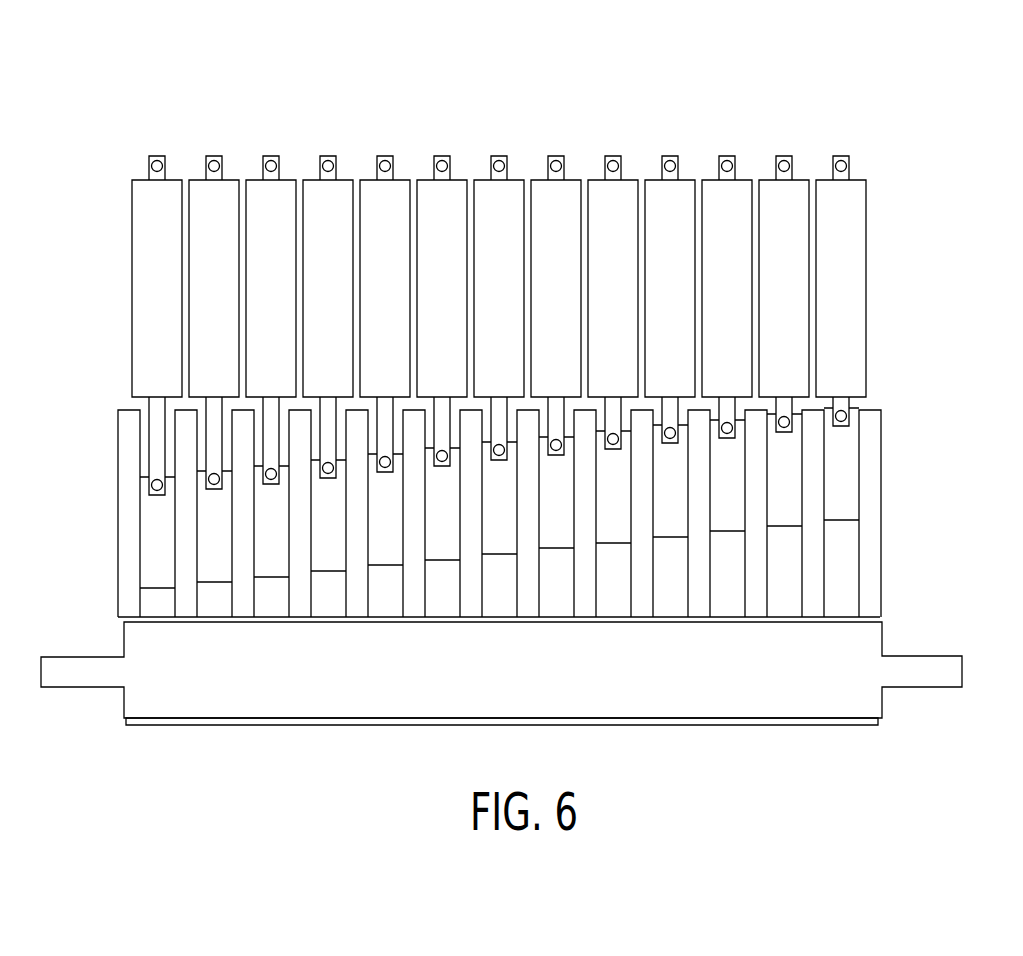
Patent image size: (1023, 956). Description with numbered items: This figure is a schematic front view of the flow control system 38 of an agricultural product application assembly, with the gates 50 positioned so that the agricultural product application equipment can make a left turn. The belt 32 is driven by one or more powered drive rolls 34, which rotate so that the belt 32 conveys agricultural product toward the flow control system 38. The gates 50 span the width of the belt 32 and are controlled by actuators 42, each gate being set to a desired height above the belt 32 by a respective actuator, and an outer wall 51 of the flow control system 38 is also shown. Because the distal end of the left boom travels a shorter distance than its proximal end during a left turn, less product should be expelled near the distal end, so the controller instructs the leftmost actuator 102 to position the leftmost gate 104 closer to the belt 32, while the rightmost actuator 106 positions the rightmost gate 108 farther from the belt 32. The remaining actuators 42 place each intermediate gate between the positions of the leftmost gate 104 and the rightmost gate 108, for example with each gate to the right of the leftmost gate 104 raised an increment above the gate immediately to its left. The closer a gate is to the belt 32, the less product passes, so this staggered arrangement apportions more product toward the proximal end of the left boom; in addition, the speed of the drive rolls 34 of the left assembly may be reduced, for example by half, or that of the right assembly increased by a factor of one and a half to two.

The flow control system 38 is at (884, 108).
The actuators 42 is at (799, 177).
The leftmost actuator 102 is at (132, 218).
The rightmost actuator 106 is at (866, 262).
The leftmost gate 104 is at (158, 525).
The gates 50 is at (784, 468).
The outer wall 51 is at (868, 482).
The rightmost gate 108 is at (838, 506).
The drive rolls 34 is at (843, 680).
The belt 32 is at (810, 727).